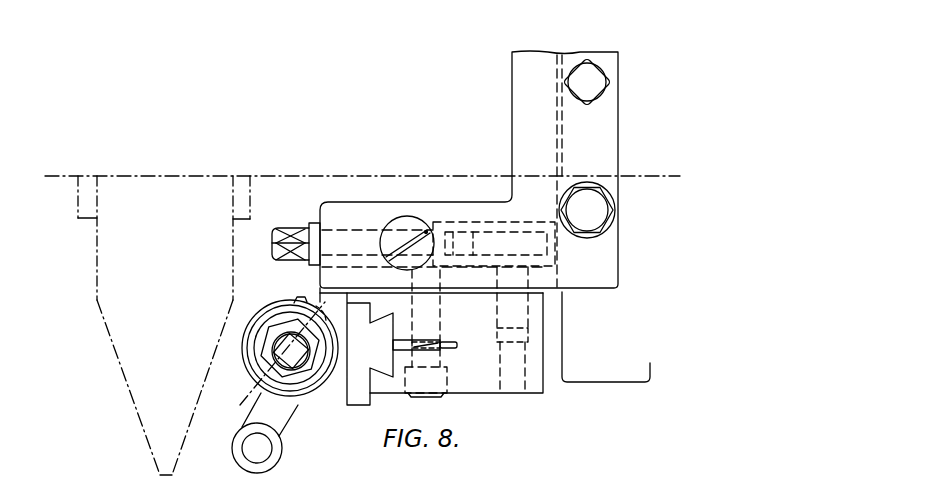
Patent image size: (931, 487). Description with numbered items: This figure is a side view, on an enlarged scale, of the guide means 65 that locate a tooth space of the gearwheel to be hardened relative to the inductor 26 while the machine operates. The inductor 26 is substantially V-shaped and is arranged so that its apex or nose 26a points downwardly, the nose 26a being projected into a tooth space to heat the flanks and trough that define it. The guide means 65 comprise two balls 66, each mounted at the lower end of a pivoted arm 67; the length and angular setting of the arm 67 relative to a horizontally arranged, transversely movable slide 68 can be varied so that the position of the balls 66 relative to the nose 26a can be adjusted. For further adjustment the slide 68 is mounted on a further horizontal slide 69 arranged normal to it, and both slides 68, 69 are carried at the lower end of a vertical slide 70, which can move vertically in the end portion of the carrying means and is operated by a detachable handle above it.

The inductor 26 is at (132, 331).
The nose of the inductor 26a is at (157, 425).
The guide means 65 is at (300, 416).
The ball 66 is at (235, 448).
The pivoted arm 67 is at (258, 398).
The slide 68 is at (356, 378).
The further horizontal slide 69 is at (489, 385).
The vertical slide 70 is at (516, 152).